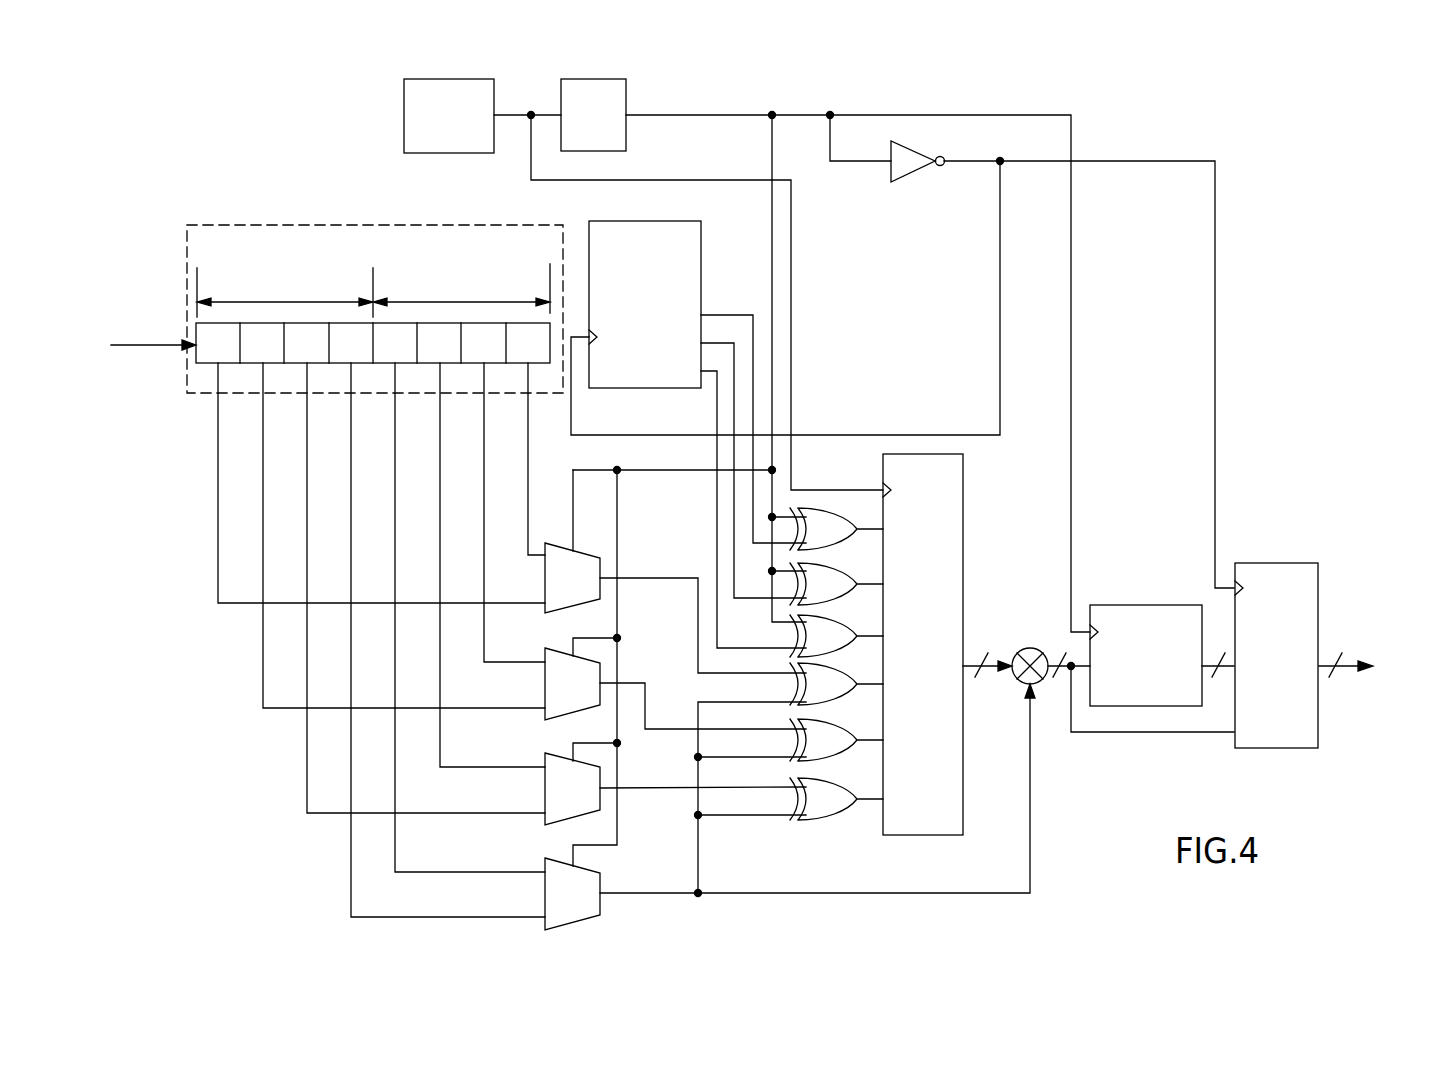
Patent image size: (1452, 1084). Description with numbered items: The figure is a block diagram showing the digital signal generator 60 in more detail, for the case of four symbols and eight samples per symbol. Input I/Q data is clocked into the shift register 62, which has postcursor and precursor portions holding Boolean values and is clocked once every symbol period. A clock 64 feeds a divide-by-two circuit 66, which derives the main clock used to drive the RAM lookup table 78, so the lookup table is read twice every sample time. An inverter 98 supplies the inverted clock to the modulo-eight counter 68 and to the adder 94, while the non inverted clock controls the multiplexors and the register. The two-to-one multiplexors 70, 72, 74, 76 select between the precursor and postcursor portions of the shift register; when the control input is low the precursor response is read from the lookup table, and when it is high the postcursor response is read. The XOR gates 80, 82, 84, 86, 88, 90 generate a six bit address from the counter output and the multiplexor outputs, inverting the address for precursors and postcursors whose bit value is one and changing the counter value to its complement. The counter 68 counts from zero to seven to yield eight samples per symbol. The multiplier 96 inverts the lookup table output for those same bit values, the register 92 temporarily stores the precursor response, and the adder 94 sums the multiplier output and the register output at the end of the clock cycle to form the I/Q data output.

The digital signal generator 60 is at (231, 778).
The shift register 62 is at (336, 222).
The clock 64 is at (404, 118).
The divide by 2 circuit 66 is at (626, 97).
The modulo 8 counter 68 is at (701, 268).
The 2 to 1 multiplexor 70 is at (545, 572).
The 2 to 1 multiplexor 72 is at (545, 680).
The 2 to 1 multiplexor 74 is at (545, 784).
The 2 to 1 multiplexor 76 is at (545, 889).
The RAM lookup table 78 is at (963, 519).
The XOR gate 80 is at (836, 548).
The XOR gate 82 is at (836, 603).
The XOR gate 84 is at (836, 656).
The XOR gate 86 is at (836, 712).
The XOR gate 88 is at (836, 767).
The XOR gate 90 is at (836, 823).
The register 92 is at (1168, 605).
The adder 94 is at (1257, 563).
The multiplier 96 is at (1035, 647).
The inverter 98 is at (912, 172).